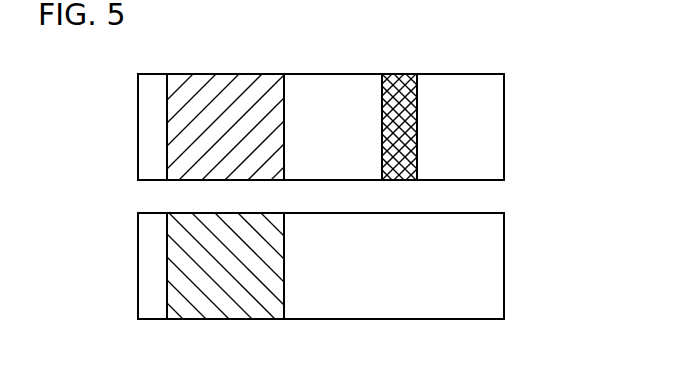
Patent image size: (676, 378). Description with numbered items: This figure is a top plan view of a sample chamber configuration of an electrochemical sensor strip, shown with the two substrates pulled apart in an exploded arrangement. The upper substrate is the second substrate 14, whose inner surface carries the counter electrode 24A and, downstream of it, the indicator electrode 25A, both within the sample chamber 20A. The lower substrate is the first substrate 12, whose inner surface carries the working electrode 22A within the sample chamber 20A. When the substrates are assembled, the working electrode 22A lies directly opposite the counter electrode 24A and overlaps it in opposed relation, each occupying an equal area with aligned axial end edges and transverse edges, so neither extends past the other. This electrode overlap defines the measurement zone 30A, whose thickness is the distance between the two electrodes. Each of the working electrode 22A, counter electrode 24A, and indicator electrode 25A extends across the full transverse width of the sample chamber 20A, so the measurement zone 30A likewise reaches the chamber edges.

The second substrate 14 is at (138, 117).
The first substrate 12 is at (138, 252).
The measurement zone 30A is at (190, 135).
The counter electrode 24A is at (250, 110).
The working electrode 22A is at (237, 283).
The indicator electrode 25A is at (413, 92).
The sample chamber 20A is at (492, 145).